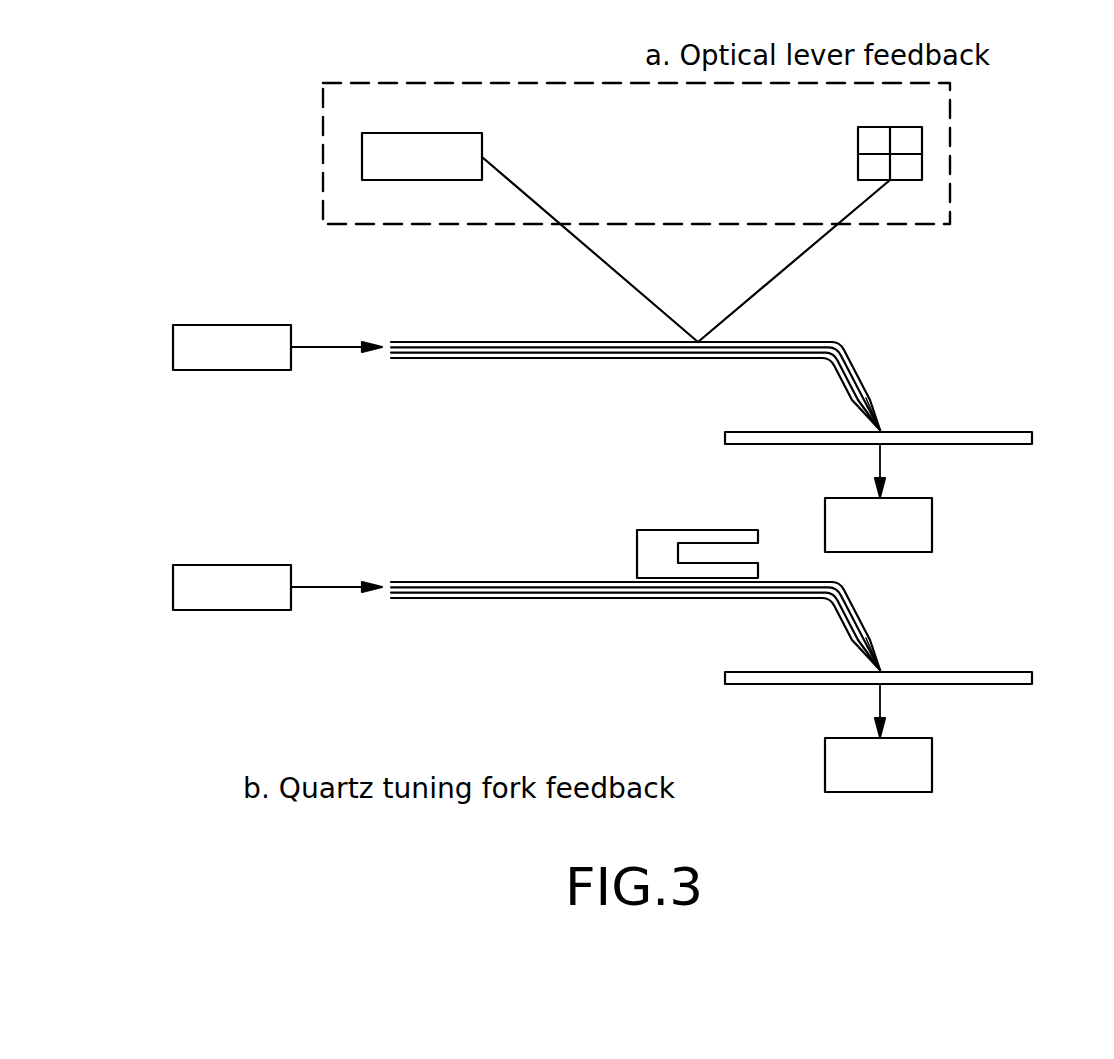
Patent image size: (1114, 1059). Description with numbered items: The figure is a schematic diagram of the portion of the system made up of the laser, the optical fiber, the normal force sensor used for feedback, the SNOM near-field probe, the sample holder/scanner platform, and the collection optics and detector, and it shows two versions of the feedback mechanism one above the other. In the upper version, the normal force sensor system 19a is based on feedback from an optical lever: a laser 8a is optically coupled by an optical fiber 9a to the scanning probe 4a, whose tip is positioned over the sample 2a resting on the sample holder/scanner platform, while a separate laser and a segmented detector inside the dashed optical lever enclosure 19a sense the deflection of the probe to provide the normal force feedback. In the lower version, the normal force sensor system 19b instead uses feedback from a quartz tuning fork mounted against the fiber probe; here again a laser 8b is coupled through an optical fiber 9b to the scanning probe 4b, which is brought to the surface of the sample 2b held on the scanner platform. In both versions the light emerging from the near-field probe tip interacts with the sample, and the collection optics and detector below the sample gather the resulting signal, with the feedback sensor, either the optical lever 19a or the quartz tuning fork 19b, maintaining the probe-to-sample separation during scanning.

The optical lever feedback version of normal force sensor system 19a is at (503, 62).
The laser 8a is at (232, 371).
The optical fiber 9a is at (465, 359).
The scanning probe 4a is at (863, 372).
The sample 2a is at (998, 445).
The quartz tuning fork feedback version of normal force sensor system 19b is at (680, 530).
The laser 8b is at (232, 611).
The optical fiber 9b is at (465, 599).
The scanning probe 4b is at (863, 612).
The sample 2b is at (998, 685).